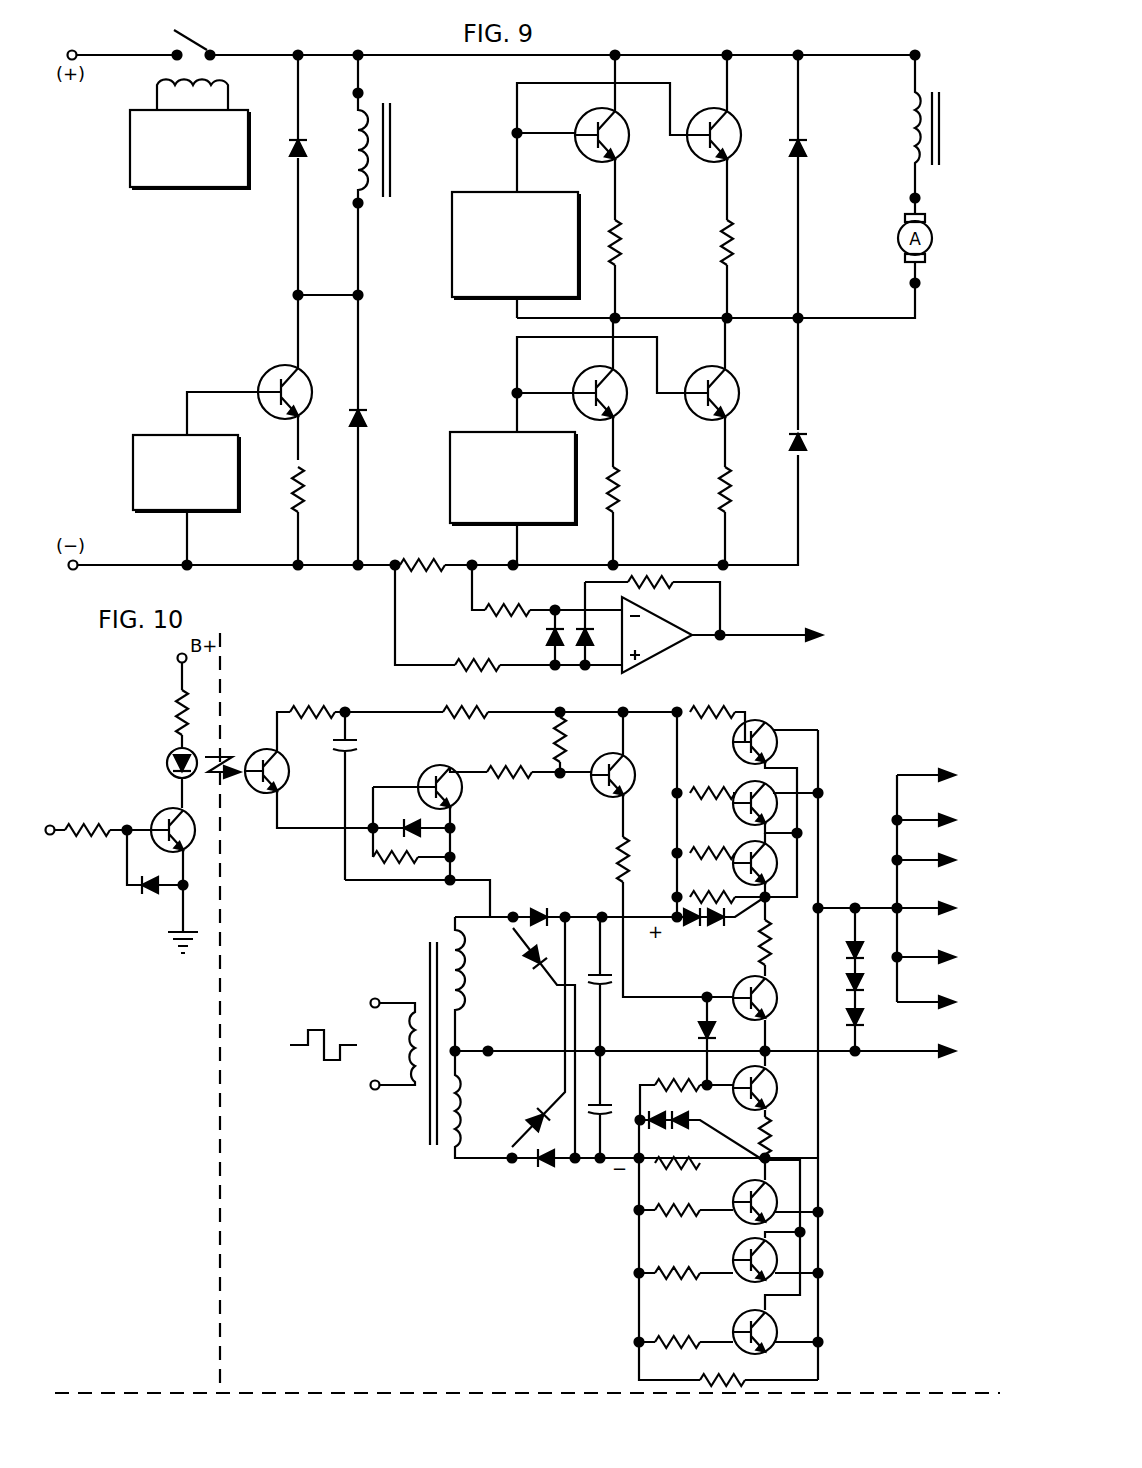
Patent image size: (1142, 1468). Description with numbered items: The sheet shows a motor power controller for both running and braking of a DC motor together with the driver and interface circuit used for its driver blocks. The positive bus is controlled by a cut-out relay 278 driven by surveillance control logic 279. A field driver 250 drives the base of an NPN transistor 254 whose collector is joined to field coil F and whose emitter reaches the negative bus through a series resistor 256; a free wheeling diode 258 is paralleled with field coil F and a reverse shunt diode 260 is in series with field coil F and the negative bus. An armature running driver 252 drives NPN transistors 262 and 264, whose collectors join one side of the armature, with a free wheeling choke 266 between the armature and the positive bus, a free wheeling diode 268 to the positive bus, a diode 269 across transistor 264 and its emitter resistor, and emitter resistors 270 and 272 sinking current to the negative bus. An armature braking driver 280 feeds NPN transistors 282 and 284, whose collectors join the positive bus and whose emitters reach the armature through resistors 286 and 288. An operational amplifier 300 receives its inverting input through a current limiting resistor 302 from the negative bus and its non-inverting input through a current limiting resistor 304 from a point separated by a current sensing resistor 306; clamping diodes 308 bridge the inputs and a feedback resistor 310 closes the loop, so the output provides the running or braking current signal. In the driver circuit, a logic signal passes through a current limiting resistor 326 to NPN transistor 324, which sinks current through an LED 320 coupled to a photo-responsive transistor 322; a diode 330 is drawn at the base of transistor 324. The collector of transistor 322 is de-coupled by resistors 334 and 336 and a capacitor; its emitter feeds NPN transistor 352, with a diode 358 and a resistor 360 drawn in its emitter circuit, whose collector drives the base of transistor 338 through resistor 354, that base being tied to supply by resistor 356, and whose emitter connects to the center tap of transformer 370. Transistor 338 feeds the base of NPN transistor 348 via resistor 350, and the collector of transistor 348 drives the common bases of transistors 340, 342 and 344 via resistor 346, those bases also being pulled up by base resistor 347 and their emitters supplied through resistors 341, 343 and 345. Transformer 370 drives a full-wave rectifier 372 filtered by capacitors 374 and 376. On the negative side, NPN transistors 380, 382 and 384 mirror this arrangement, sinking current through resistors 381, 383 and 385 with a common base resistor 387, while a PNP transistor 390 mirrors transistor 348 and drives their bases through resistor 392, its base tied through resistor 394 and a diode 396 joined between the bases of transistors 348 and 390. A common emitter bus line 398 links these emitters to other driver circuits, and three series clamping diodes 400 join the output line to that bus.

In FIG. 9, the field driver 250 is at (133, 462).
In FIG. 9, the armature running driver 252 is at (450, 478).
In FIG. 9, the NPN transistor 254 is at (262, 368).
In FIG. 9, the series-connected resistor 256 is at (303, 478).
In FIG. 9, the free wheeling diode 258 is at (305, 155).
In FIG. 9, the reverse shunt diode 260 is at (366, 410).
In FIG. 9, the NPN transistor 262 is at (578, 372).
In FIG. 9, the NPN transistor 264 is at (735, 383).
In FIG. 9, the free wheeling choke 266 is at (905, 120).
In FIG. 9, the free wheeling diode 268 is at (808, 150).
In FIG. 9, the diode 269 is at (806, 440).
In FIG. 9, the series connected resistor 270 is at (618, 488).
In FIG. 9, the series connected resistor 272 is at (730, 488).
In FIG. 9, the cut-out relay 278 is at (190, 40).
In FIG. 9, the surveillance control logic 279 is at (190, 187).
In FIG. 9, the armature braking driver circuit 280 is at (452, 278).
In FIG. 9, the NPN transistor 282 is at (580, 112).
In FIG. 9, the NPN transistor 284 is at (738, 128).
In FIG. 9, the resistor 286 is at (620, 232).
In FIG. 9, the resistor 288 is at (732, 232).
In FIG. 9, the operational amplifier 300 is at (668, 646).
In FIG. 9, the current limiting resistor 302 is at (512, 603).
In FIG. 9, the current limiting resistor 304 is at (470, 657).
In FIG. 9, the current sensing resistor 306 is at (420, 556).
In FIG. 9, the clamping diodes 308 is at (530, 633).
In FIG. 9, the feedback resistor 310 is at (655, 590).
In FIG. 10, the LED 320 is at (167, 760).
In FIG. 10, the photo-responsive transistor 322 is at (255, 787).
In FIG. 10, the NPN transistor 324 is at (160, 810).
In FIG. 10, the current limiting resistor 326 is at (170, 712).
In FIG. 10, the diode 330 is at (135, 895).
In FIG. 10, the resistor 334 is at (312, 705).
In FIG. 10, the resistor 336 is at (455, 705).
In FIG. 10, the transistor 338 is at (600, 792).
In FIG. 10, the transistor 340 is at (768, 725).
In FIG. 10, the resistor 341 is at (708, 705).
In FIG. 10, the transistor 342 is at (745, 770).
In FIG. 10, the resistor 343 is at (722, 790).
In FIG. 10, the transistor 344 is at (745, 845).
In FIG. 10, the resistor 345 is at (727, 858).
In FIG. 10, the resistor 346 is at (755, 935).
In FIG. 10, the base resistor 347 is at (730, 897).
In FIG. 10, the NPN transistor 348 is at (745, 982).
In FIG. 10, the resistor 350 is at (618, 862).
In FIG. 10, the NPN transistor 352 is at (440, 765).
In FIG. 10, the current limiting resistor 354 is at (500, 762).
In FIG. 10, the resistor 356 is at (590, 732).
In FIG. 10, the diode 358 is at (412, 818).
In FIG. 10, the resistor 360 is at (400, 865).
In FIG. 10, the transformer 370 is at (410, 1120).
In FIG. 10, the full-wave diode rectifier 372 is at (550, 1175).
In FIG. 10, the filtering capacitor 374 is at (612, 992).
In FIG. 10, the filtering capacitor 376 is at (605, 1096).
In FIG. 10, the NPN transistor 380 is at (735, 1322).
In FIG. 10, the series connected resistor 381 is at (682, 1338).
In FIG. 10, the NPN transistor 382 is at (777, 1255).
In FIG. 10, the series connected resistor 383 is at (697, 1270).
In FIG. 10, the NPN transistor 384 is at (777, 1192).
In FIG. 10, the series connected resistor 385 is at (697, 1208).
In FIG. 10, the resistor 387 is at (692, 1165).
In FIG. 10, the PNP transistor 390 is at (777, 1088).
In FIG. 10, the resistor 392 is at (772, 1135).
In FIG. 10, the resistor 394 is at (695, 1088).
In FIG. 10, the diode 396 is at (700, 1028).
In FIG. 10, the common emitter bus line 398 is at (900, 1060).
In FIG. 10, the clamping diodes 400 is at (872, 1005).
In FIG. 9, the field coil F is at (397, 125).